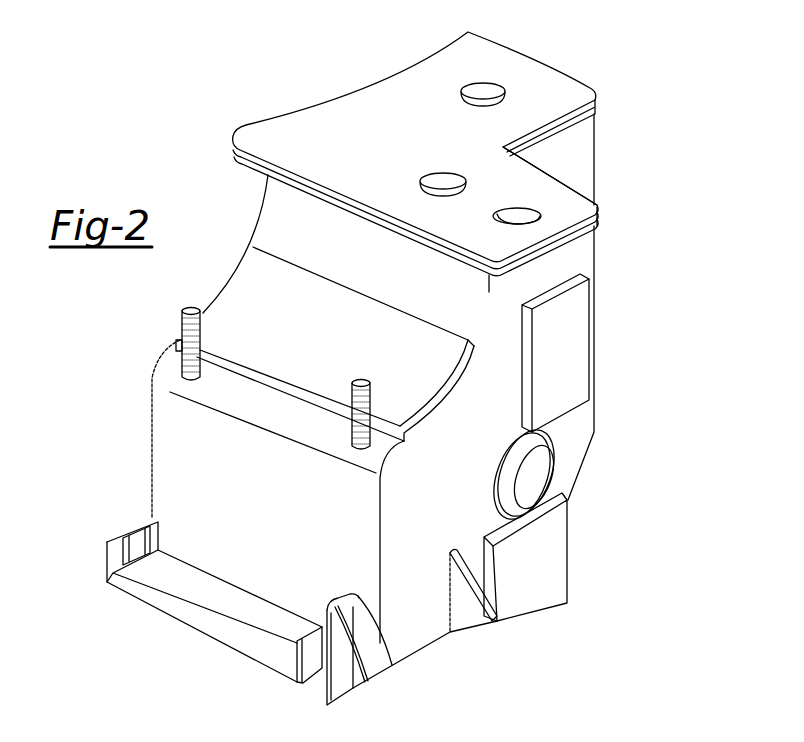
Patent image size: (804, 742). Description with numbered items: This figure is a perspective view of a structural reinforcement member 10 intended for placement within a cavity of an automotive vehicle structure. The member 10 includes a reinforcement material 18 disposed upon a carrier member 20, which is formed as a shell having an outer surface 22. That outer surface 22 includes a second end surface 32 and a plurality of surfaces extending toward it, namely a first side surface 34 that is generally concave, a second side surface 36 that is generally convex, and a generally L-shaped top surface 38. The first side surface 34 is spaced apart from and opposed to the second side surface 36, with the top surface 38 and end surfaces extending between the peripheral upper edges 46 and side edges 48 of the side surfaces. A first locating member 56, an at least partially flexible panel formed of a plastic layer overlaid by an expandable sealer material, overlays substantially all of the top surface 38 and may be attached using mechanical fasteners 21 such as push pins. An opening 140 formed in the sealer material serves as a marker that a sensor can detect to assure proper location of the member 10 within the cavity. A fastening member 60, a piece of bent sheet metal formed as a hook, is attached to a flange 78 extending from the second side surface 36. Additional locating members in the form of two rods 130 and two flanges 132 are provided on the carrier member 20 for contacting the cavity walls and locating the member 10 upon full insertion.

The structural reinforcement member 10 is at (196, 264).
The reinforcement material 18 is at (330, 345).
The carrier member 20 is at (413, 600).
The mechanical fasteners 21 is at (478, 91).
The outer surface 22 is at (294, 570).
The second end surface 32 is at (585, 441).
The first side surface 34 is at (582, 174).
The second side surface 36 is at (254, 501).
The top surface 38 is at (553, 137).
The upper edges 46 is at (403, 233).
The side edges 48 is at (489, 292).
The first locating member 56 is at (366, 130).
The fastening member 60 is at (378, 690).
The flange 78 is at (187, 585).
The rods 130 is at (182, 336).
The flanges 132 is at (497, 632).
The opening 140 is at (522, 211).